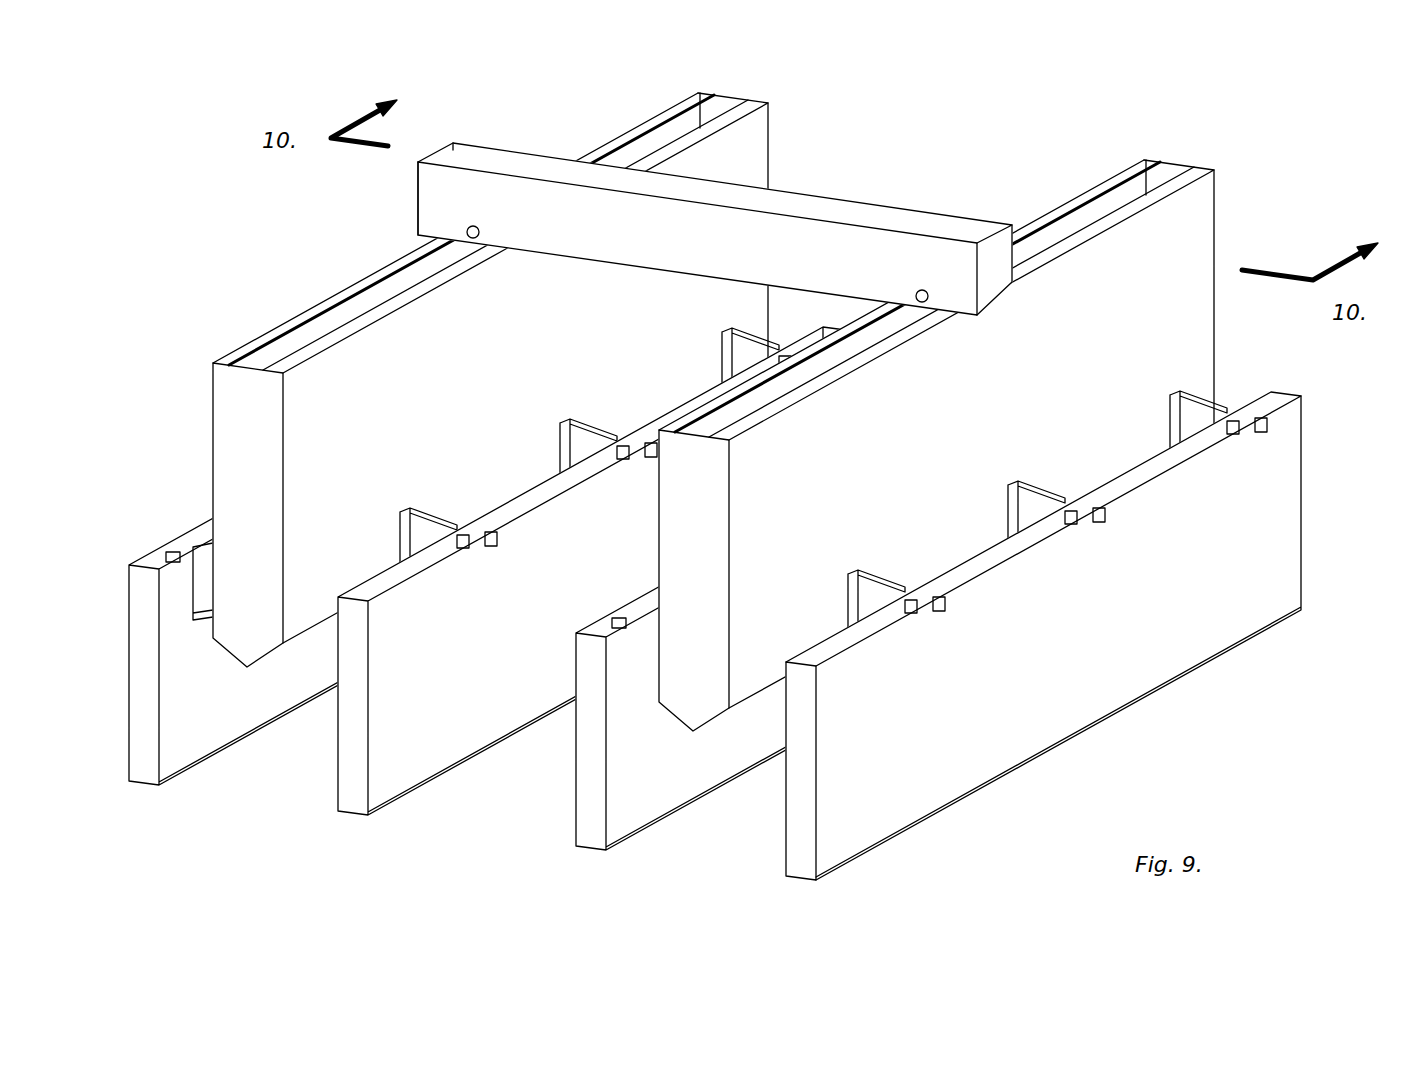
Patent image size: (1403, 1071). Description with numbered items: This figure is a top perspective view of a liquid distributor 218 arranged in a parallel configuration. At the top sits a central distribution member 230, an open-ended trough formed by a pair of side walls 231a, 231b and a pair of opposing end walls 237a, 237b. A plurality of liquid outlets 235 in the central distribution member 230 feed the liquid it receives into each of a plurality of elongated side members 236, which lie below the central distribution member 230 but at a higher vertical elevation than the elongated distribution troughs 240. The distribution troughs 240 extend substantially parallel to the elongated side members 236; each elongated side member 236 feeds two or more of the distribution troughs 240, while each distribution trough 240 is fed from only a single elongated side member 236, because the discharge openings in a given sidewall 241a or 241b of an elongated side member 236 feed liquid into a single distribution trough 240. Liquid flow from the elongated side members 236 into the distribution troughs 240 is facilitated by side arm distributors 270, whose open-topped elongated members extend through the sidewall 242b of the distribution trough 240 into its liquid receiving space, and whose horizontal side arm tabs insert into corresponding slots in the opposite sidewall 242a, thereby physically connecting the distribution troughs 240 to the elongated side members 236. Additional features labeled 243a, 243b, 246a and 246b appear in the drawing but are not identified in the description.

The liquid distributor 218 is at (300, 176).
The central distribution member 230 is at (761, 218).
The side wall 231a is at (688, 262).
The side wall 231b is at (900, 216).
The liquid outlets 235 is at (480, 228).
The elongated side members 236 is at (758, 417).
The end wall 237a is at (996, 286).
The end wall 237b is at (444, 160).
The elongated distribution troughs 240 is at (766, 606).
The sidewall of elongated side member 241a is at (752, 152).
The sidewall of elongated side member 241b is at (677, 126).
The sidewall of distribution trough 242a is at (772, 862).
The sidewall of distribution trough 242b is at (1094, 636).
The first end of divider wall 243a is at (258, 654).
The second end of divider wall 243b is at (731, 110).
The end face of side panel 246a is at (802, 744).
The side face of side panel 246b is at (1302, 555).
The side arm distributors 270 is at (558, 443).